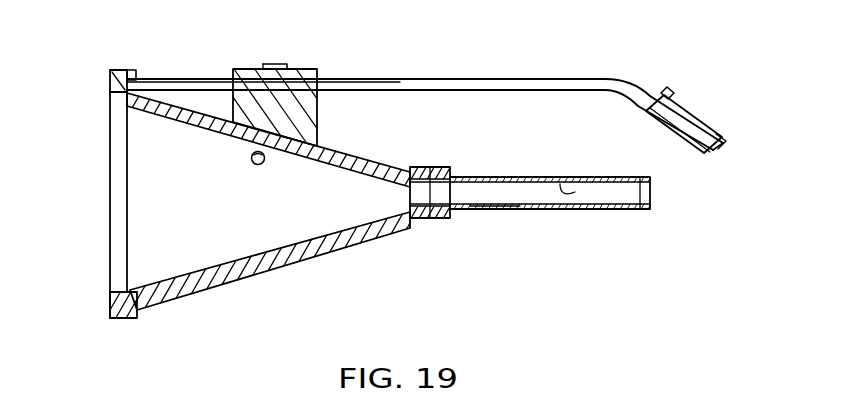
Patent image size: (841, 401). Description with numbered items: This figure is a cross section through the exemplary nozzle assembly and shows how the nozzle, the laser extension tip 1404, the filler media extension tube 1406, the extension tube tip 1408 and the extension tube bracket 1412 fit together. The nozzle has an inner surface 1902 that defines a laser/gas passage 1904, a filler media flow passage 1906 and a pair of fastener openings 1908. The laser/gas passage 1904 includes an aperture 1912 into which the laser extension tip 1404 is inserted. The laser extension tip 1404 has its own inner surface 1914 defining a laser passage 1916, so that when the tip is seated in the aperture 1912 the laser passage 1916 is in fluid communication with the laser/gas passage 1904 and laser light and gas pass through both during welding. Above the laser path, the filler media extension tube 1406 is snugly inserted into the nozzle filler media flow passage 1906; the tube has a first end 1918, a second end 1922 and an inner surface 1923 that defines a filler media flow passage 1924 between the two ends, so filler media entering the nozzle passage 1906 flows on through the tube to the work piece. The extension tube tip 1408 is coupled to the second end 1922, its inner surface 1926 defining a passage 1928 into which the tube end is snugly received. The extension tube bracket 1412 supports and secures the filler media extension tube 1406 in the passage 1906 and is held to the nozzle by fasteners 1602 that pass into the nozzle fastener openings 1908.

The inner surface 1902 is at (172, 280).
The laser/gas passage 1904 is at (263, 212).
The filler media flow passage 1906 is at (112, 82).
The fastener openings 1908 is at (288, 152).
The aperture 1912 is at (408, 190).
The inner surface 1914 is at (575, 192).
The laser passage 1916 is at (490, 197).
The first end 1918 is at (132, 71).
The extension tube bracket 1412 is at (292, 65).
The inner surface 1923 is at (398, 78).
The filler media flow passage 1924 is at (476, 79).
The filler media extension tube 1406 is at (552, 78).
The second end 1922 is at (730, 108).
The inner surface 1926 is at (664, 104).
The passage 1928 is at (727, 142).
The extension tube tip 1408 is at (701, 153).
The laser extension tip 1404 is at (615, 210).
The fasteners 1602 is at (251, 158).